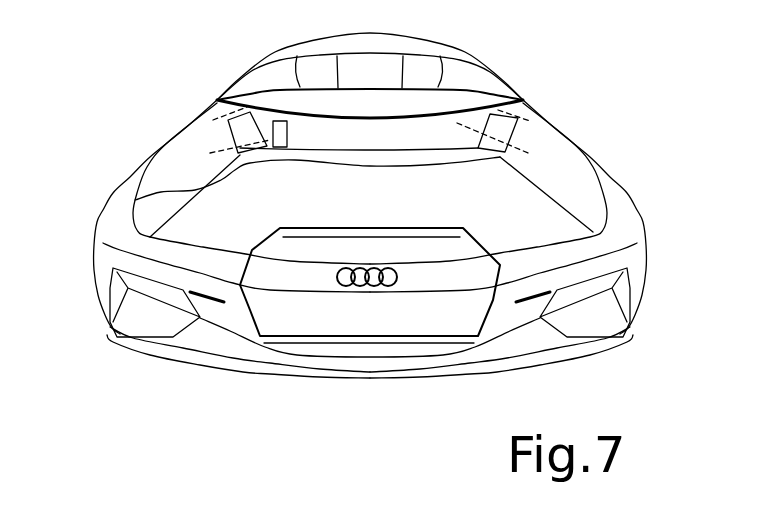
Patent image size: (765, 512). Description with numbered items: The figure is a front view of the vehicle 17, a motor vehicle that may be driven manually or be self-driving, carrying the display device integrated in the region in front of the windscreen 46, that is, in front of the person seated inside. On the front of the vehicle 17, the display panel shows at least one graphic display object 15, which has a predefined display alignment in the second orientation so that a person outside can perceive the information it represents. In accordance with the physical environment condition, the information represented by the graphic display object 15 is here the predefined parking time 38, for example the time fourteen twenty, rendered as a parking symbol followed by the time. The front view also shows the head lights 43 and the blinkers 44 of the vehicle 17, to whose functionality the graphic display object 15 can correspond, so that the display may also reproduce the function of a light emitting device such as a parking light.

The graphic display object 15 is at (295, 163).
The vehicle 17 is at (610, 176).
The predefined parking time 38 is at (275, 151).
The head light 43 is at (140, 315).
The blinker 44 is at (187, 127).
The windscreen 46 is at (490, 82).